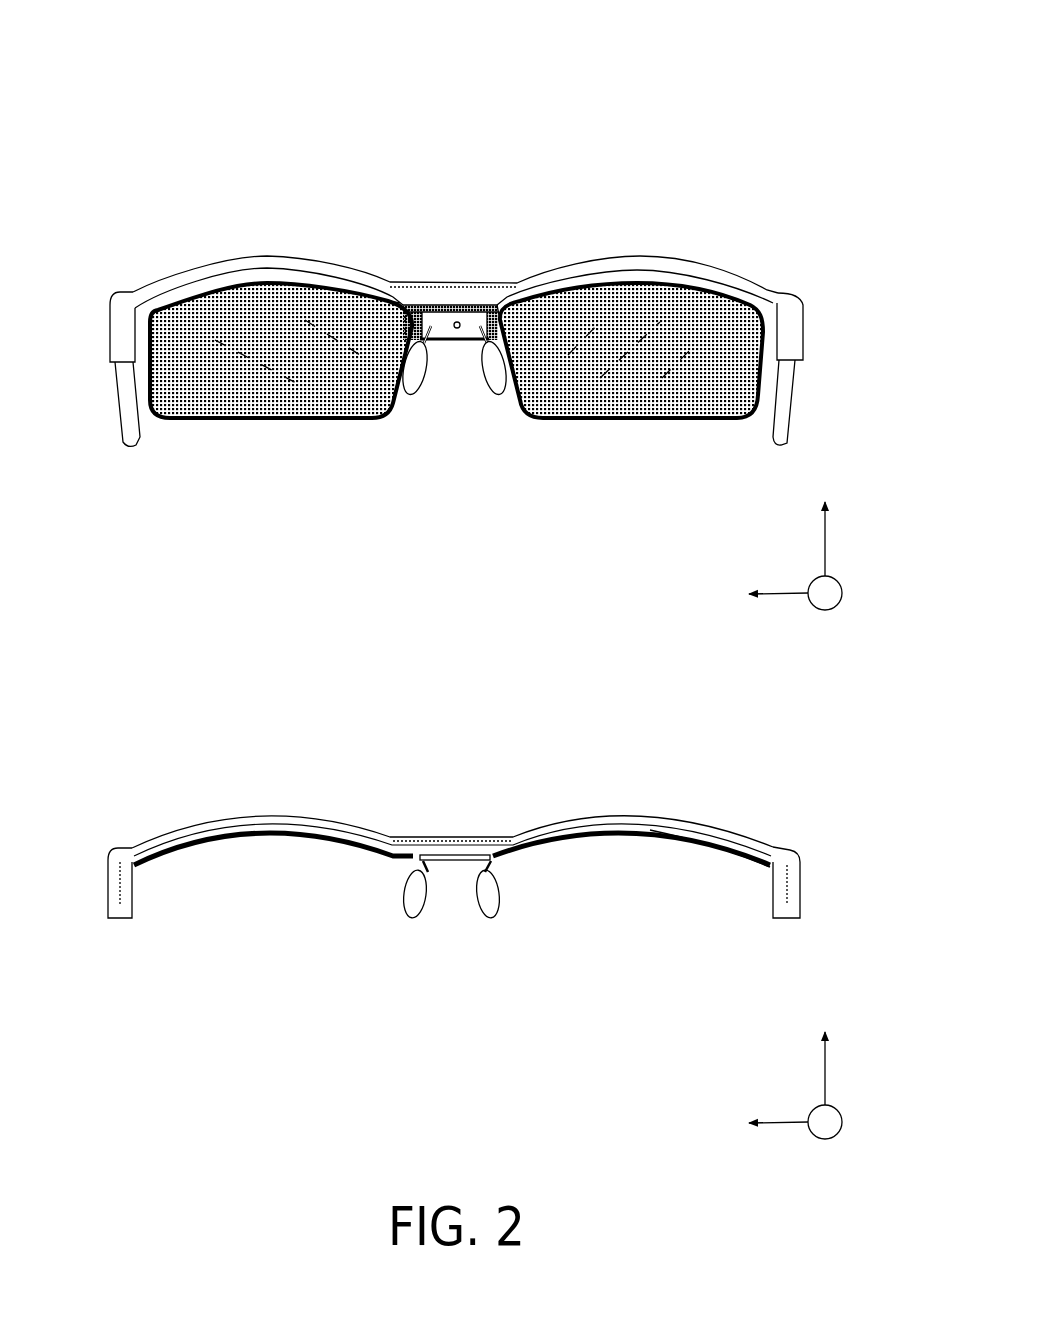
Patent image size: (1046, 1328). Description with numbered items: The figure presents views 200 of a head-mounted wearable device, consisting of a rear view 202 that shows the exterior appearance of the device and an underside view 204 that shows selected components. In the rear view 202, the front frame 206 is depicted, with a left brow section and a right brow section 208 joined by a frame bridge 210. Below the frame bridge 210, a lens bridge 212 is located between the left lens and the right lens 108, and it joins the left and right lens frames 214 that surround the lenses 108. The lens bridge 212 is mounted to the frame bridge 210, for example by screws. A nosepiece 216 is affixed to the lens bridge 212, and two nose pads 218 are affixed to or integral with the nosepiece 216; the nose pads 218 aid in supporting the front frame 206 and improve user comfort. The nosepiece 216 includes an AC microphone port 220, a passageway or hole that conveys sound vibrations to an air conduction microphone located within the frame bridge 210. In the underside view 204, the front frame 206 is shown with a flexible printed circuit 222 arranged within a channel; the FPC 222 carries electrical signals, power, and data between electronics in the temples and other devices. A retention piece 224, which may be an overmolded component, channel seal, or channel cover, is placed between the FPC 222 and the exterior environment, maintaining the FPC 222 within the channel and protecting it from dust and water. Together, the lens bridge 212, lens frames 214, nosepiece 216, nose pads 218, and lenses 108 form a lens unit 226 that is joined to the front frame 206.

The views 200 is at (712, 48).
The rear view 202 is at (223, 78).
The underside view 204 is at (262, 730).
The front frame 206 is at (225, 815).
The brow section 208 is at (797, 165).
The frame bridge 210 is at (512, 198).
The lens bridge 212 is at (470, 345).
The lens frame 214 is at (627, 418).
The nosepiece 216 is at (375, 1052).
The nose pad 218 is at (342, 972).
The AC microphone port 220 is at (458, 319).
The flexible printed circuit (FPC) 222 is at (484, 846).
The retention piece 224 is at (274, 817).
The lens unit 226 is at (754, 868).
The lens 108 is at (636, 382).